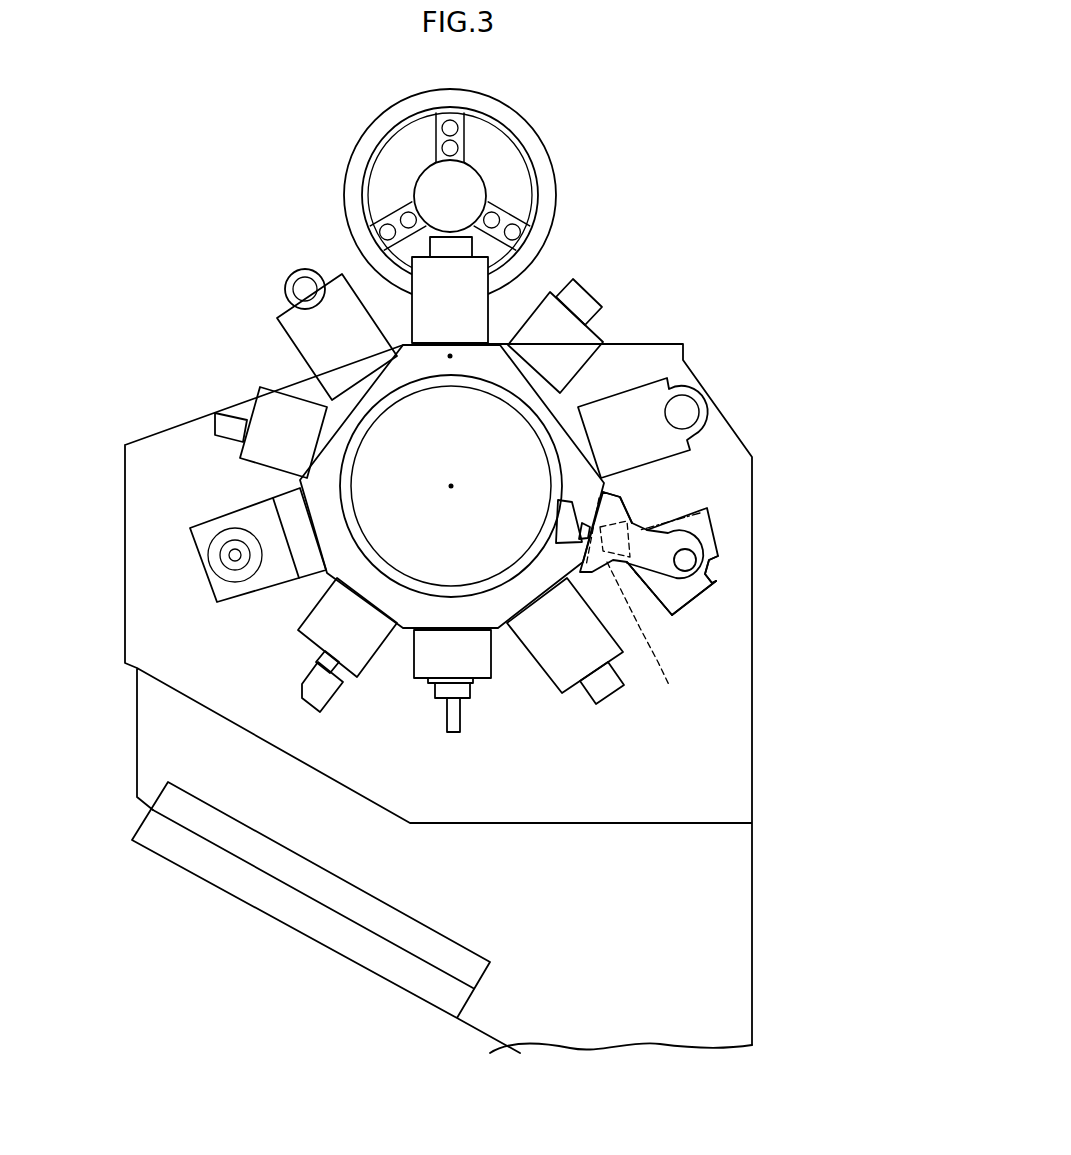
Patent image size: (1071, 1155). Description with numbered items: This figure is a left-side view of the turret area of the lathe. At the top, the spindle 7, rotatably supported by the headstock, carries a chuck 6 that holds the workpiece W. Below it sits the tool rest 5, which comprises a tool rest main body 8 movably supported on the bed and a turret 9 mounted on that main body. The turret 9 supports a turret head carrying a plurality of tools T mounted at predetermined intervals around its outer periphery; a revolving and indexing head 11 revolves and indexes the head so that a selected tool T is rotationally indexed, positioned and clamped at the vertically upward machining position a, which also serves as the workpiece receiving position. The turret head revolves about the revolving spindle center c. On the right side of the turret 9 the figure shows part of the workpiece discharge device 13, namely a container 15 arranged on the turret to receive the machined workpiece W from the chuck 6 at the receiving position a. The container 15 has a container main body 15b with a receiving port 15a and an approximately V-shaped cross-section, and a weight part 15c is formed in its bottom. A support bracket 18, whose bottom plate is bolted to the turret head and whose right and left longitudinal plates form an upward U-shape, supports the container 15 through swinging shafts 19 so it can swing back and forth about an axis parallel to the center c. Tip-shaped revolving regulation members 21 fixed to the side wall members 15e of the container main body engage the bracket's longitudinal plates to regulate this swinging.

The tool rest 5 is at (212, 203).
The chuck 6 is at (503, 132).
The spindle 7 is at (487, 93).
The workpiece W is at (488, 177).
The tool T is at (325, 400).
The tool rest main body 8 is at (152, 425).
The turret 9 is at (250, 496).
The revolving and indexing head 11 is at (317, 461).
The machining position a is at (450, 357).
The revolving spindle center c is at (451, 487).
The workpiece discharge device 13 is at (703, 549).
The container 15 is at (693, 505).
The receiving port 15a is at (696, 598).
The container main body 15b is at (660, 608).
The weight part 15c is at (650, 616).
The side wall member 15e is at (716, 548).
The support bracket 18 is at (634, 499).
The swinging shaft 19 is at (693, 547).
The revolving regulation member 21 is at (710, 588).